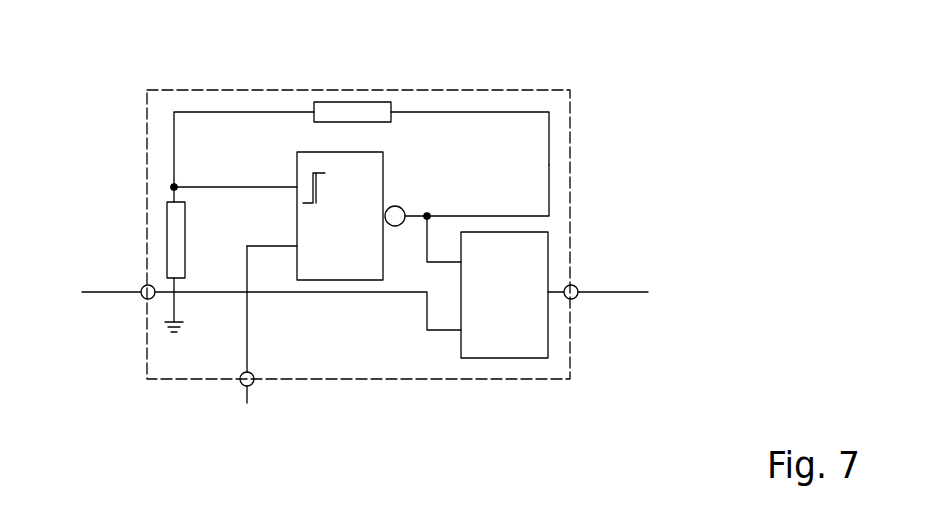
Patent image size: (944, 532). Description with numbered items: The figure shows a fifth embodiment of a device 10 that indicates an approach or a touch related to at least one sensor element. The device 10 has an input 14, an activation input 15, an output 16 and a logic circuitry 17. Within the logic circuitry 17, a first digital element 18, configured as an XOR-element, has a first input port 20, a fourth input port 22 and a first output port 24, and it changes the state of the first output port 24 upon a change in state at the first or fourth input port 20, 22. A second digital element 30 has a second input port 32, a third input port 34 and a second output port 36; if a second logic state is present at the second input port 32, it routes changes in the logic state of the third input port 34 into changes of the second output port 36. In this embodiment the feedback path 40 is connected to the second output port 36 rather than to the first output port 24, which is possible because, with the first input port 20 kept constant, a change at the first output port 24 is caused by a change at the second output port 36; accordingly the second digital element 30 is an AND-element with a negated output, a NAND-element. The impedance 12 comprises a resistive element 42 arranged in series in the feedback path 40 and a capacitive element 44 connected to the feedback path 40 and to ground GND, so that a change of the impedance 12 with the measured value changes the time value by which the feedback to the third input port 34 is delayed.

The device 10 is at (324, 193).
The impedance 12 is at (371, 81).
The input 14 is at (140, 298).
The activation input 15 is at (240, 385).
The output 16 is at (578, 297).
The logic circuitry 17 is at (530, 156).
The first digital element 18 is at (487, 358).
The first input port 20 is at (461, 331).
The fourth input port 22 is at (461, 263).
The first output port 24 is at (549, 293).
The second digital element 30 is at (330, 280).
The second input port 32 is at (292, 246).
The third input port 34 is at (297, 188).
The second output port 36 is at (404, 221).
The feedback path 40 is at (550, 188).
The resistive element 42 is at (377, 110).
The capacitive element 44 is at (178, 243).